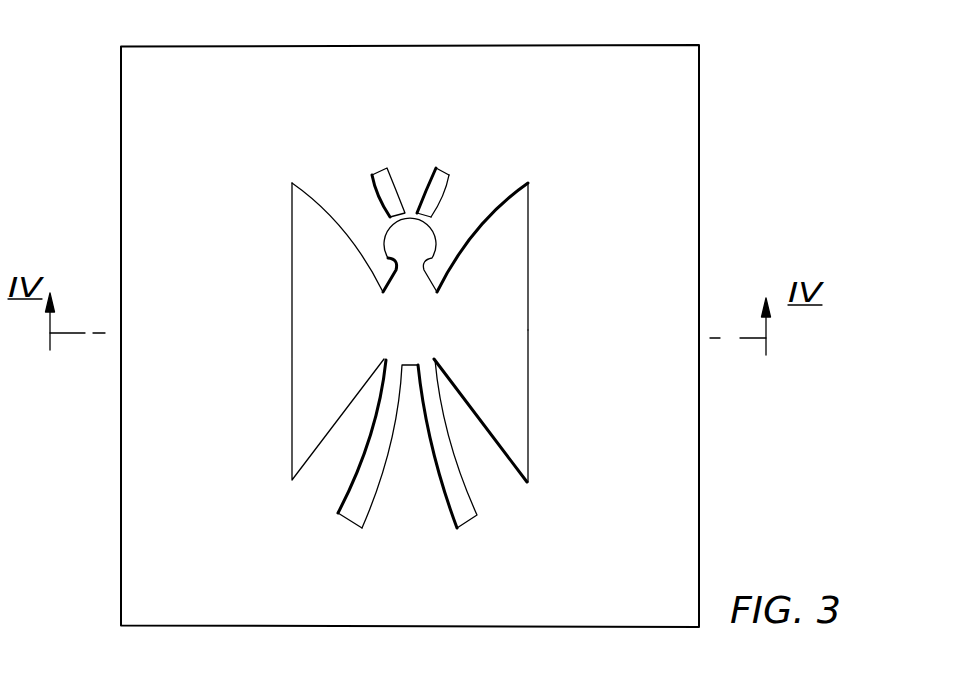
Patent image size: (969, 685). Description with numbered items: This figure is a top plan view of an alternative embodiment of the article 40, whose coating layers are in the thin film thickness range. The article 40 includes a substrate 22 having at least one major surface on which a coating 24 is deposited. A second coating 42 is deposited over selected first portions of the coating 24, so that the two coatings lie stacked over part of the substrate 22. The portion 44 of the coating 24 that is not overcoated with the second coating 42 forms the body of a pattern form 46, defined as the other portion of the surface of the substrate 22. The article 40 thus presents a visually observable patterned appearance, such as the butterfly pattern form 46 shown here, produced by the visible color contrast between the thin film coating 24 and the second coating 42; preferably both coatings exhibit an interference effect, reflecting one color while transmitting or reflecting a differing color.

The article 40 is at (468, 336).
The substrate 22 is at (699, 155).
The coating 24 is at (488, 337).
The second coating 42 is at (682, 504).
The pattern form 46 is at (529, 208).
The portion of the coating 44 is at (527, 410).